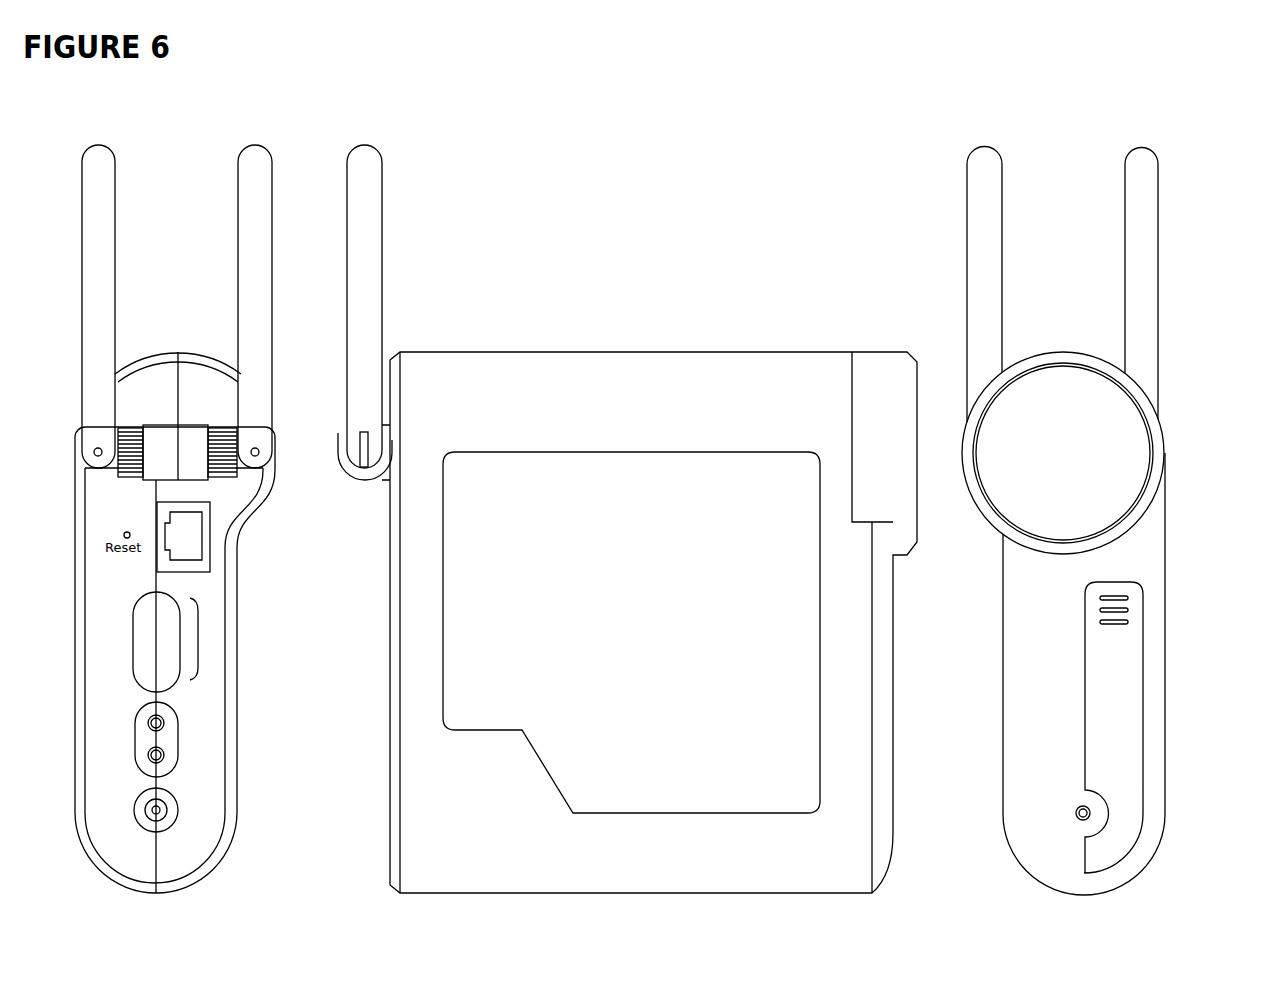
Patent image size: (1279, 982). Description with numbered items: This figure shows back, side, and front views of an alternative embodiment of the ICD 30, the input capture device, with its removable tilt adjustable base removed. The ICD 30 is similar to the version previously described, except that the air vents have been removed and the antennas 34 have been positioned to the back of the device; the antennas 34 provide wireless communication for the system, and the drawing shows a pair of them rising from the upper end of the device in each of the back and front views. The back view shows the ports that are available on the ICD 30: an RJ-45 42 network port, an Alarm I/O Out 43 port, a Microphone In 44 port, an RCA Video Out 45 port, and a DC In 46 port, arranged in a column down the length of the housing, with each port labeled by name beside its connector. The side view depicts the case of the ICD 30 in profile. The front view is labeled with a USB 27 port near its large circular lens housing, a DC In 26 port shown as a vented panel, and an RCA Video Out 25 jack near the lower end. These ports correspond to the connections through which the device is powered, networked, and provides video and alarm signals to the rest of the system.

The antennas 34 is at (418, 69).
The ICD 30 is at (642, 335).
The RJ-45 42 is at (188, 535).
The Alarm I/O Out 43 is at (198, 623).
The Microphone In 44 is at (164, 723).
The RCA Video Out 45 is at (164, 755).
The DC In 46 is at (178, 810).
The USB 27 is at (1122, 447).
The DC In 26 is at (1090, 608).
The RCA Video Out 25 is at (1076, 813).